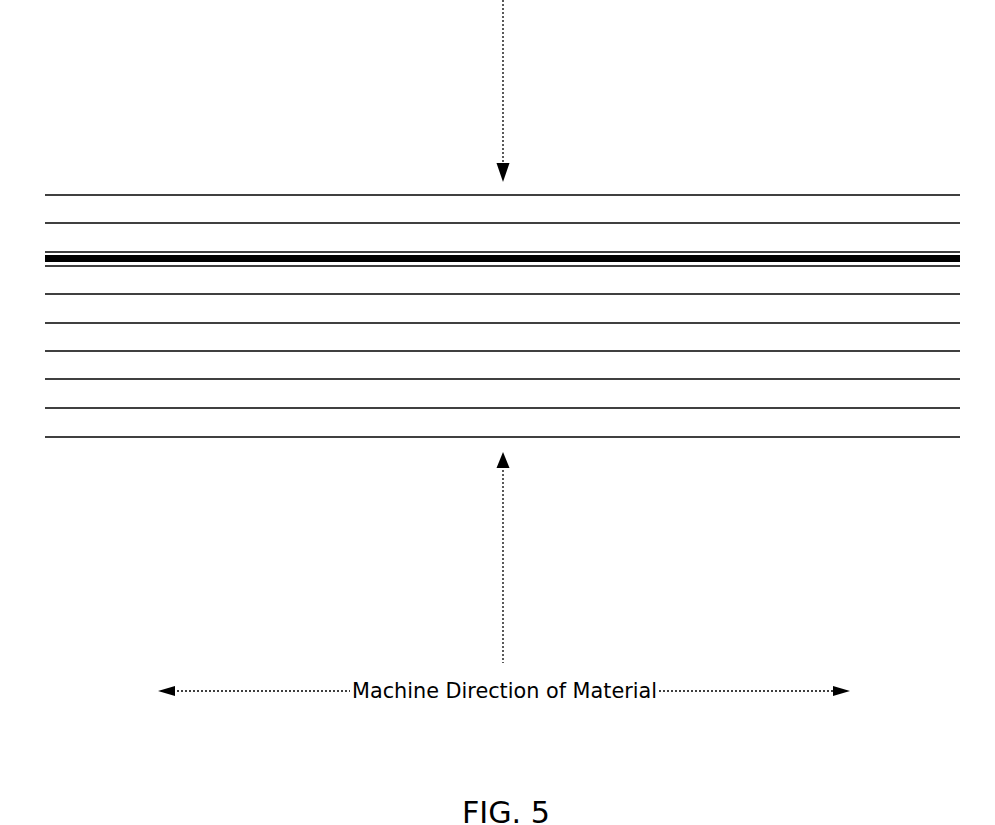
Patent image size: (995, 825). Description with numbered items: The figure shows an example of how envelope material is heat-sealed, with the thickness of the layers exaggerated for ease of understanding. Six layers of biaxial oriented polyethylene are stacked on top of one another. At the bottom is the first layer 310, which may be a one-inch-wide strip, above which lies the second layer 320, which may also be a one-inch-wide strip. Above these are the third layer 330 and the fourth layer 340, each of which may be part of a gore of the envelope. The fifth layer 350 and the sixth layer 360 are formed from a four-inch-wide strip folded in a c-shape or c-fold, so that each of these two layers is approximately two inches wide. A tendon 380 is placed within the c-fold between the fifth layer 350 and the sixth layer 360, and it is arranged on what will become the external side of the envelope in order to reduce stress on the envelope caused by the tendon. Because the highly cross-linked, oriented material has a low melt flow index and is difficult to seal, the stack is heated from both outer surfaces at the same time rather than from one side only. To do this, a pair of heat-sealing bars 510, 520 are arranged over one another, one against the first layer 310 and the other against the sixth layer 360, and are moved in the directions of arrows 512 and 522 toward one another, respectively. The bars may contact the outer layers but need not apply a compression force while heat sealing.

The first layer 310 is at (502, 395).
The second layer 320 is at (502, 366).
The third layer 330 is at (502, 338).
The fourth layer 340 is at (502, 310).
The fifth layer 350 is at (502, 282).
The sixth layer 360 is at (502, 240).
The tendon 380 is at (62, 255).
The heat-sealing bar 510 is at (502, 424).
The heat-sealing bar 520 is at (502, 209).
The arrow 512 is at (503, 557).
The arrow 522 is at (503, 91).